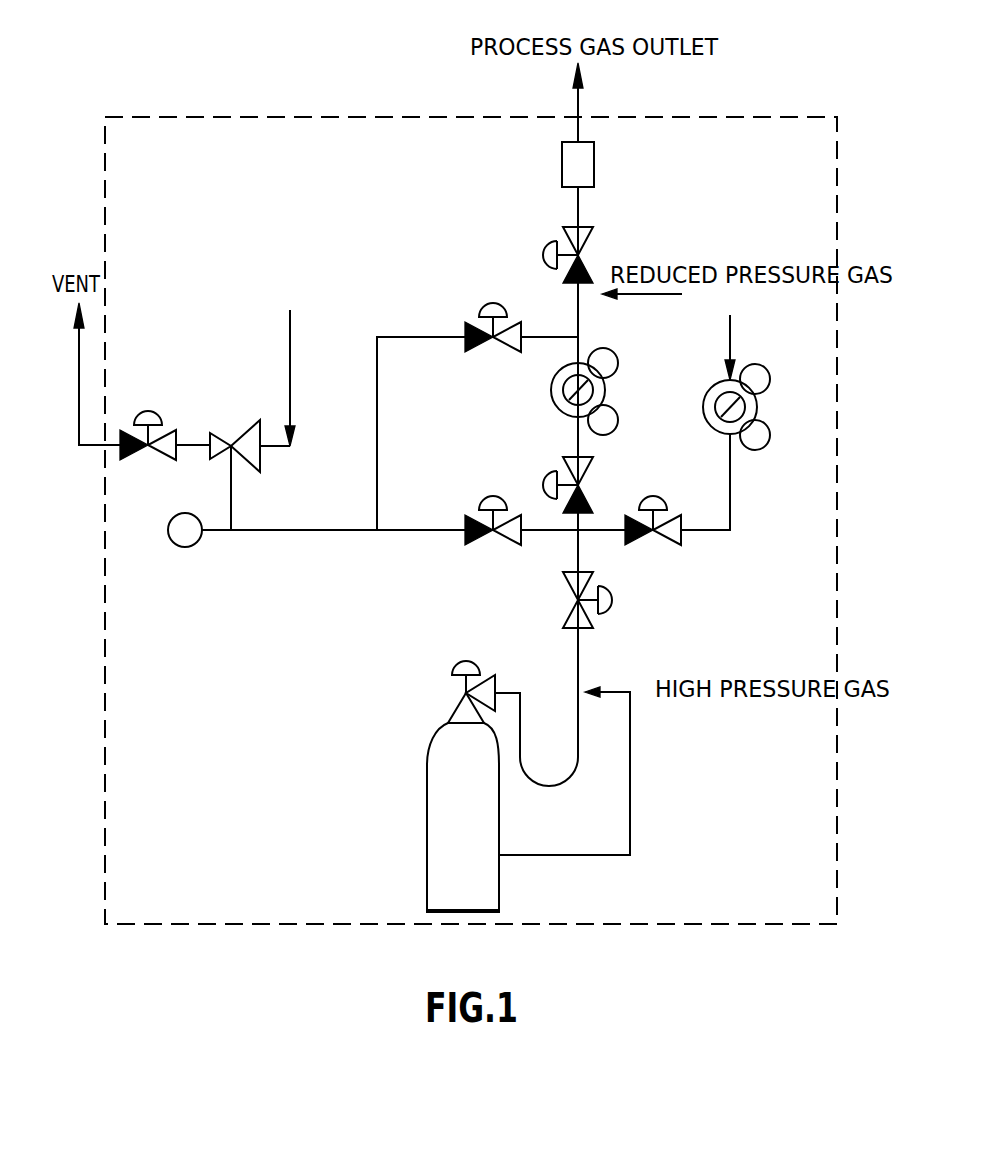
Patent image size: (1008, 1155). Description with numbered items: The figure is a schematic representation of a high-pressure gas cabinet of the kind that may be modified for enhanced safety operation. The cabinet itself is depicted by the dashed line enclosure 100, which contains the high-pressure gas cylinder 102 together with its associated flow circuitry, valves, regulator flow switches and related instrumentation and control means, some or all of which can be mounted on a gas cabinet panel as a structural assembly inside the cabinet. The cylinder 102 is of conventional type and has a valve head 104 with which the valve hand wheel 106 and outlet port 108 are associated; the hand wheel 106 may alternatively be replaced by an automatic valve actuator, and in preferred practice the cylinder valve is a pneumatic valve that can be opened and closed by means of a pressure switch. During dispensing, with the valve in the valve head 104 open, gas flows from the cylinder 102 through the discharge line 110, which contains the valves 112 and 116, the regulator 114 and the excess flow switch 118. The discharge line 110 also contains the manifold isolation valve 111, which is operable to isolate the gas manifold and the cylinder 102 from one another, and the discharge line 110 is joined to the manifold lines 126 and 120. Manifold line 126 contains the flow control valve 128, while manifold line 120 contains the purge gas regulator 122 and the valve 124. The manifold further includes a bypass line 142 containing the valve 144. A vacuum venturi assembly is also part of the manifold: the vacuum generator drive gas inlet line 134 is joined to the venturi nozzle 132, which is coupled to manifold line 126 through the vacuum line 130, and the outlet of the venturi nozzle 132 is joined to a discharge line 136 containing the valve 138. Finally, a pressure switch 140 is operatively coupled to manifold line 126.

The dashed line enclosure 100 is at (772, 85).
The high-pressure gas cylinder 102 is at (427, 806).
The valve head 104 is at (453, 714).
The valve hand wheel 106 is at (470, 660).
The outlet port 108 is at (496, 682).
The discharge line 110 is at (580, 665).
The manifold isolation valve 111 is at (614, 605).
The valve 112 is at (589, 494).
The regulator 114 is at (553, 403).
The valve 116 is at (588, 236).
The excess flow switch 118 is at (594, 162).
The manifold line 120 is at (730, 340).
The purge gas regulator 122 is at (758, 406).
The valve 124 is at (648, 547).
The manifold line 126 is at (399, 533).
The flow control valve 128 is at (476, 541).
The vacuum line 130 is at (234, 494).
The venturi nozzle 132 is at (246, 432).
The vacuum generator drive gas inlet line 134 is at (291, 345).
The discharge line 136 is at (194, 449).
The valve 138 is at (146, 409).
The pressure switch 140 is at (177, 545).
The bypass line 142 is at (378, 448).
The valve 144 is at (488, 301).